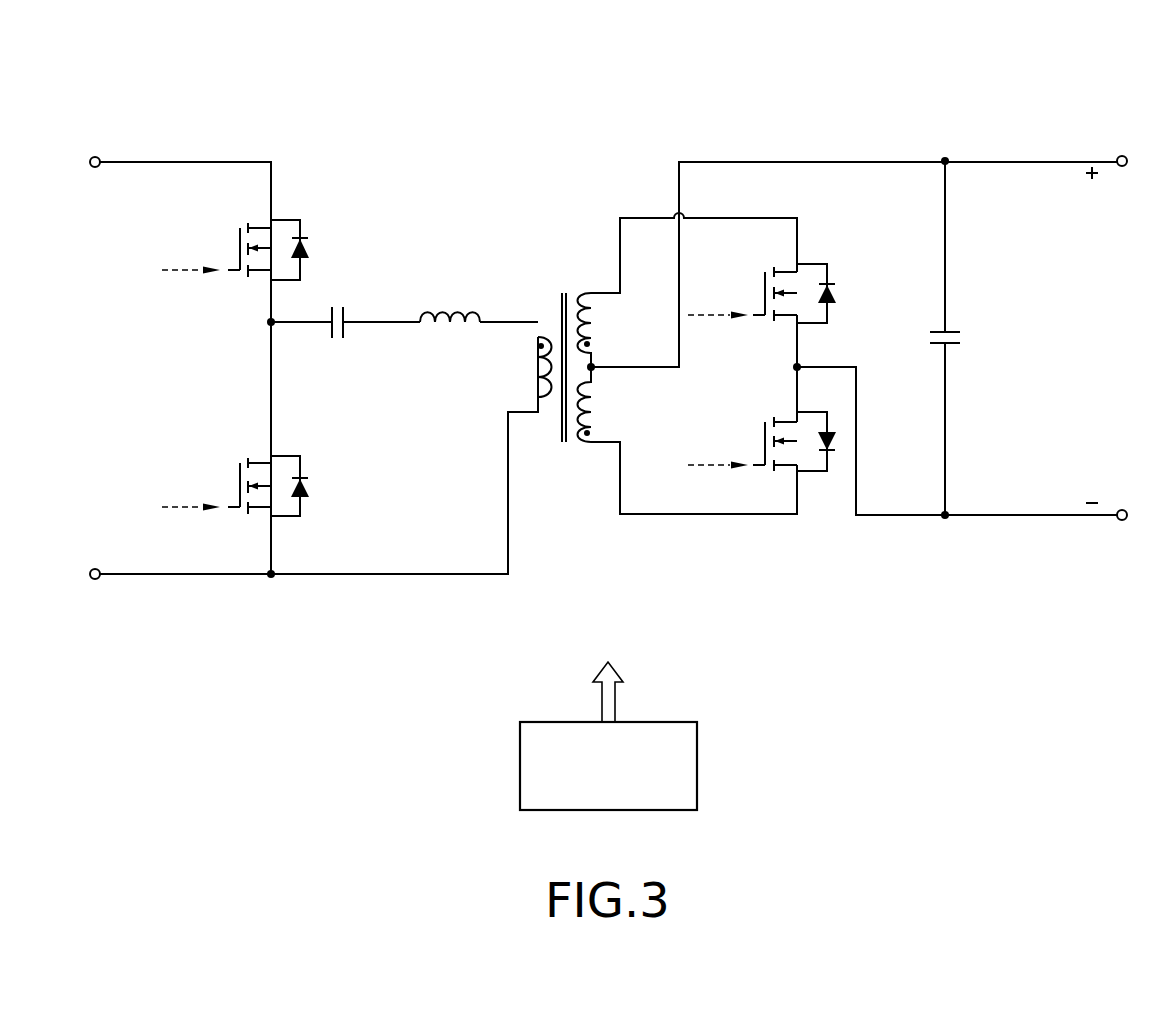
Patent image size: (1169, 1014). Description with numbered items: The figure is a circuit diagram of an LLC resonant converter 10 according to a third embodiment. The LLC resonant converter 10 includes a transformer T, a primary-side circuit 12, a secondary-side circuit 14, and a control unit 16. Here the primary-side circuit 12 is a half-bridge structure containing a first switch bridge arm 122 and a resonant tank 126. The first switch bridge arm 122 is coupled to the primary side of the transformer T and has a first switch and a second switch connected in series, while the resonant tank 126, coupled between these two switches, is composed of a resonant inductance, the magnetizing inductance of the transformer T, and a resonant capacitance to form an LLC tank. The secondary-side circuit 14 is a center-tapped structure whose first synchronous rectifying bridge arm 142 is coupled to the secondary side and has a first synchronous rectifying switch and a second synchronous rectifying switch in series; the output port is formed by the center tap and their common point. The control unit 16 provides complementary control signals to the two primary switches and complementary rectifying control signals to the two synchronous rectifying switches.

The LLC resonant converter 10 is at (621, 42).
The primary-side circuit 12 is at (357, 135).
The secondary-side circuit 14 is at (815, 135).
The control unit 16 is at (638, 728).
The first switch bridge arm 122 is at (271, 592).
The resonant tank 126 is at (426, 340).
The first synchronous rectifying bridge arm 142 is at (798, 532).